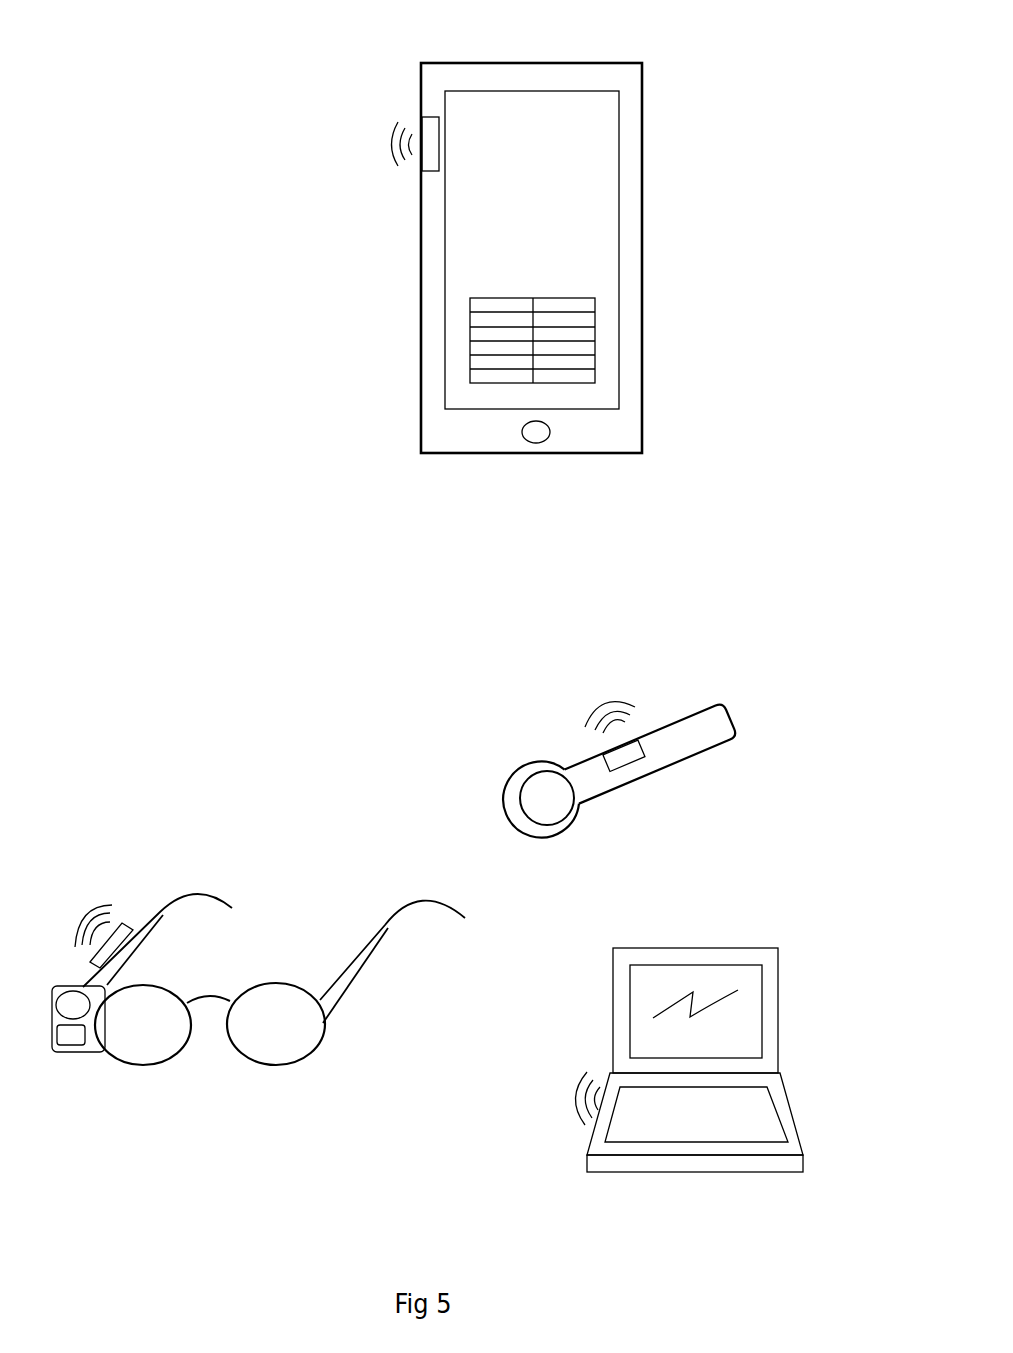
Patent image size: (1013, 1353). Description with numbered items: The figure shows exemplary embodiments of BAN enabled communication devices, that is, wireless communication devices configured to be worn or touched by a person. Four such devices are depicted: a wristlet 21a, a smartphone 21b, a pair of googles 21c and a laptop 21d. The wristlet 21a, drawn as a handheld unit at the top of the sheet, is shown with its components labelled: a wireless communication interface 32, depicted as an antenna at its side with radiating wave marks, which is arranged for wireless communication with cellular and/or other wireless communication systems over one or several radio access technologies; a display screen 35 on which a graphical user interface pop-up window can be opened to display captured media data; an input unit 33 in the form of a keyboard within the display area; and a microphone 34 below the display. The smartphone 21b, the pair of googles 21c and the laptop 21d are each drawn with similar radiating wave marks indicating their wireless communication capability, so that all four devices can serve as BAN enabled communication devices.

The wristlet 21a is at (543, 307).
The wireless communication interface 32 is at (424, 159).
The input unit 33 is at (598, 337).
The microphone 34 is at (535, 437).
The display screen 35 is at (592, 135).
The smartphone 21b is at (690, 697).
The pair of googles 21c is at (172, 1018).
The laptop 21d is at (685, 943).